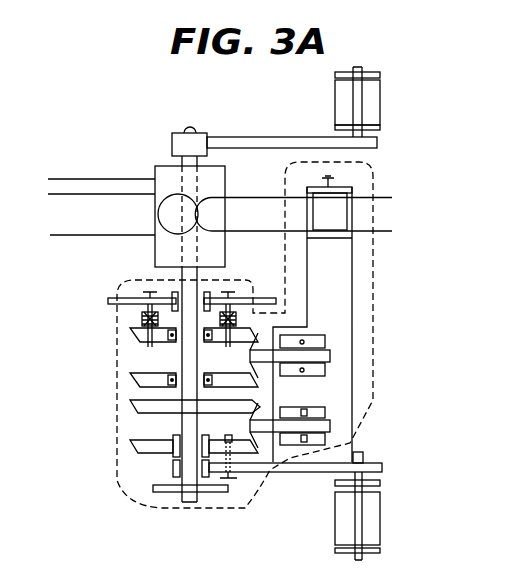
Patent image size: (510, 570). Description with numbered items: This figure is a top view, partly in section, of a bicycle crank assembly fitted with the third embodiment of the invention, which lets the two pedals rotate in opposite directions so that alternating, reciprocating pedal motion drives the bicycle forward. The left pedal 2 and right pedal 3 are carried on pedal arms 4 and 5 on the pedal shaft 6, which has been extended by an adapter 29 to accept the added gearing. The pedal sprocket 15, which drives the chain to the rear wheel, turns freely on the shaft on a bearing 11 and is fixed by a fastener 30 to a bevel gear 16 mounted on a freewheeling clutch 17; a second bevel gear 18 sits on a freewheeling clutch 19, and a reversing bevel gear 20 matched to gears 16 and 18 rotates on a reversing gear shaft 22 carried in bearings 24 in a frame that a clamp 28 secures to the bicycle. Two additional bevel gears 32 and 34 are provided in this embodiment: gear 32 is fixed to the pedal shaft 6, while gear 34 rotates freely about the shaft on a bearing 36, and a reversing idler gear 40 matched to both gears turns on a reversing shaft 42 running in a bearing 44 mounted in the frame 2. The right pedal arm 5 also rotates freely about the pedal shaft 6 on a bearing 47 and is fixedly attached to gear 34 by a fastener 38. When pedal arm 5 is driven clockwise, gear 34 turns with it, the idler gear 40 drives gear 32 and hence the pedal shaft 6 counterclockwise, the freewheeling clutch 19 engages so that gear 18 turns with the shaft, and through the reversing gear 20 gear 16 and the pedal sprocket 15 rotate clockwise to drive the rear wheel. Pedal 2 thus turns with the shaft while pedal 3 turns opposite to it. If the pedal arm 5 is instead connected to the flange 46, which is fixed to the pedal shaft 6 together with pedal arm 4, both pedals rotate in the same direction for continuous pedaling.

The left pedal 2 is at (380, 95).
The right pedal 3 is at (382, 523).
The pedal arm 4 is at (257, 137).
The pedal arm 5 is at (300, 472).
The pedal shaft 6 is at (180, 163).
The bearing 11 is at (160, 279).
The pedal sprocket 15 is at (110, 306).
The bevel gear 16 is at (133, 336).
The freewheeling clutch 17 is at (172, 346).
The bevel gear 18 is at (133, 382).
The freewheeling clutch 19 is at (170, 390).
The reversing bevel gear 20 is at (250, 380).
The reversing gear shaft 22 is at (255, 362).
The bearings 24 is at (325, 338).
The clamp 28 is at (352, 171).
The adapter 29 is at (178, 278).
The fastener 30 is at (228, 292).
The bevel gear 32 is at (133, 410).
The bevel gear 34 is at (133, 445).
The bearing 36 is at (173, 458).
The fastener 38 is at (230, 480).
The reversing idler gear 40 is at (262, 440).
The reversing shaft 42 is at (330, 415).
The bearing 44 is at (340, 448).
The flange 46 is at (167, 492).
The bearing 47 is at (172, 478).